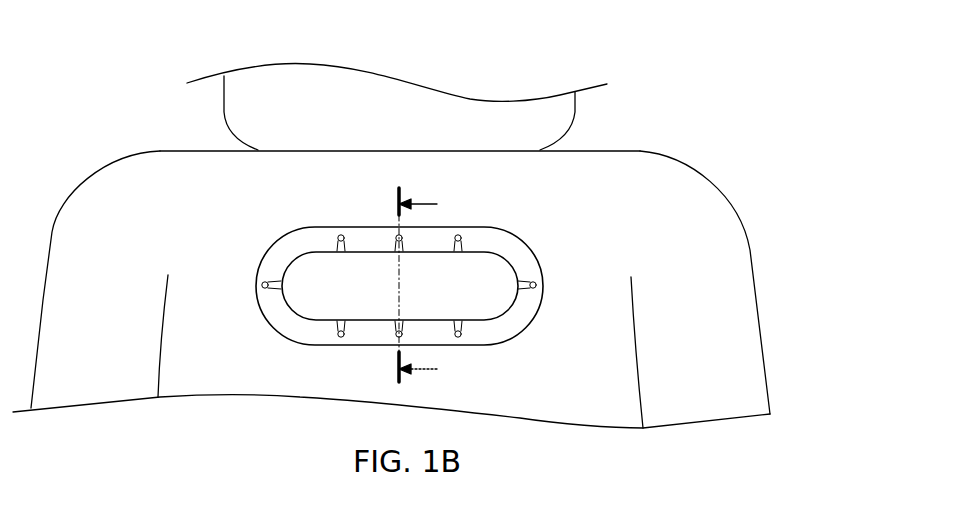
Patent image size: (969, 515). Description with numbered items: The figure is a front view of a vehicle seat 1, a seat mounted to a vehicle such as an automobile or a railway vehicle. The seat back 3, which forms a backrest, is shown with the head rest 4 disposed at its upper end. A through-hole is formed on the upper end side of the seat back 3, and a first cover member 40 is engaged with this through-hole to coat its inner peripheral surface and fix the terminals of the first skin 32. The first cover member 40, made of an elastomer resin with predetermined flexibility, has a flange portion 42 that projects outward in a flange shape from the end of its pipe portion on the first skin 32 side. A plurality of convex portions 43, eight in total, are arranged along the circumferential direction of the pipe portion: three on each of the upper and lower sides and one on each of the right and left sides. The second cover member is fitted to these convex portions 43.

The vehicle seat 1 is at (690, 66).
The seat back 3 is at (668, 144).
The head rest 4 is at (243, 107).
The first skin 32 is at (720, 227).
The first cover member 40 is at (390, 265).
The flange portion 42 is at (292, 242).
The convex portions 43 is at (546, 292).